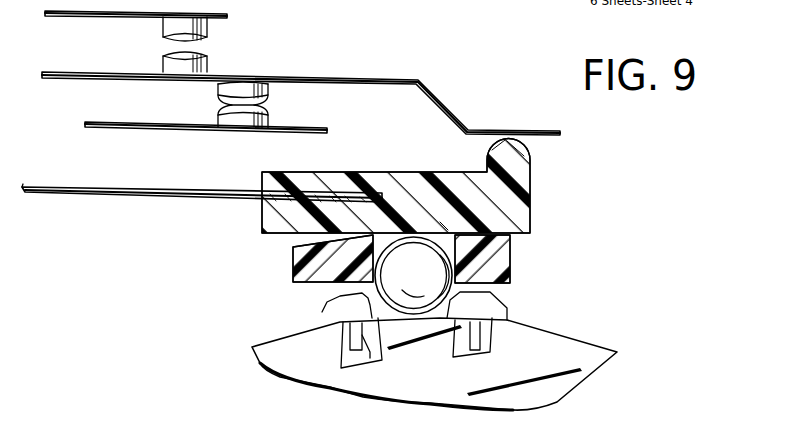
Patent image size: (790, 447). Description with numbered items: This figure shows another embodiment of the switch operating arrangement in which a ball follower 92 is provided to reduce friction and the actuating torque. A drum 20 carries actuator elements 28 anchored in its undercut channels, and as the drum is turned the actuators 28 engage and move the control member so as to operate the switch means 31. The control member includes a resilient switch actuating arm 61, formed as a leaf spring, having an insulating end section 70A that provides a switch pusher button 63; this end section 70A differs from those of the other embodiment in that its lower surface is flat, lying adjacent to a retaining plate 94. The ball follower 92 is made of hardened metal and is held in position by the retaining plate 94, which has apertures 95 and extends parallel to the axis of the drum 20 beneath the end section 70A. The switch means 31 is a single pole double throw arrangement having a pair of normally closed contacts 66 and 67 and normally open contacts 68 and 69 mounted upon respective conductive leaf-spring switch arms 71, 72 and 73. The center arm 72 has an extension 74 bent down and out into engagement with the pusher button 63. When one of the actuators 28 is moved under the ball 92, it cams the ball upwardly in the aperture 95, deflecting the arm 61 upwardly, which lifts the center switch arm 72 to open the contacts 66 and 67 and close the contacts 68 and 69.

The drum 20 is at (297, 367).
The actuator elements 28 is at (322, 310).
The switch means 31 is at (280, 50).
The resilient switch actuating arm 61 is at (134, 190).
The switch pusher button 63 is at (507, 139).
The normally closed contact 66 is at (218, 117).
The normally closed contact 67 is at (268, 88).
The normally open contact 68 is at (208, 62).
The normally open contact 69 is at (208, 30).
The insulating end section 70A is at (510, 213).
The switch arm 71 is at (140, 128).
The center switch arm 72 is at (365, 79).
The switch arm 73 is at (108, 17).
The extension 74 is at (490, 142).
The ball follower 92 is at (426, 274).
The retaining plate 94 is at (500, 250).
The aperture 95 is at (444, 226).